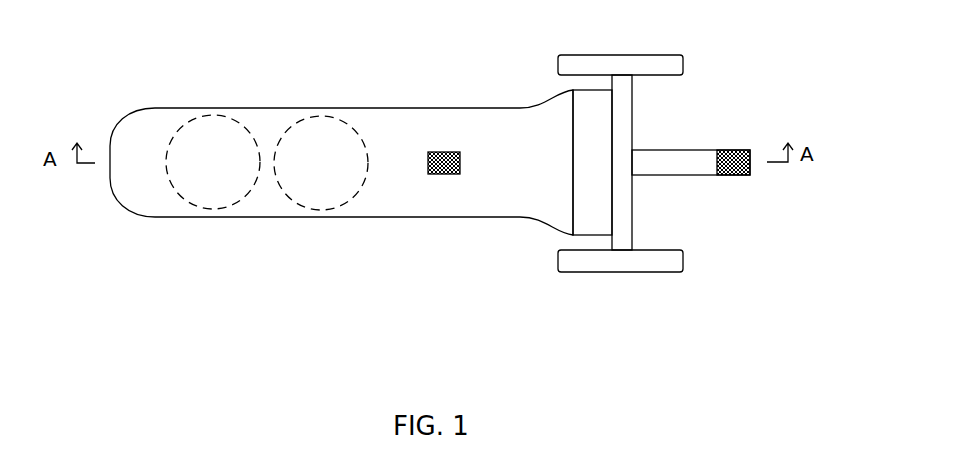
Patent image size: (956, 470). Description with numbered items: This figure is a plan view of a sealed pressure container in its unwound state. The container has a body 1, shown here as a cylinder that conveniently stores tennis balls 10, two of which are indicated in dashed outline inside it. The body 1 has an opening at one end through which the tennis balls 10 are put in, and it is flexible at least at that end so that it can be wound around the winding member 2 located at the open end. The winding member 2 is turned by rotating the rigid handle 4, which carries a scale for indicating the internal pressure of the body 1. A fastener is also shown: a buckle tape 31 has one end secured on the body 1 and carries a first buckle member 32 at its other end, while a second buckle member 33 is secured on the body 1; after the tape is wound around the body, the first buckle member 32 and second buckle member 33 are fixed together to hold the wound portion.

The body 1 is at (383, 138).
The tennis balls 10 is at (205, 145).
The winding member 2 is at (622, 133).
The rigid handle 4 is at (590, 260).
The buckle tape 31 is at (667, 170).
The first buckle member 32 is at (732, 175).
The second buckle member 33 is at (447, 152).